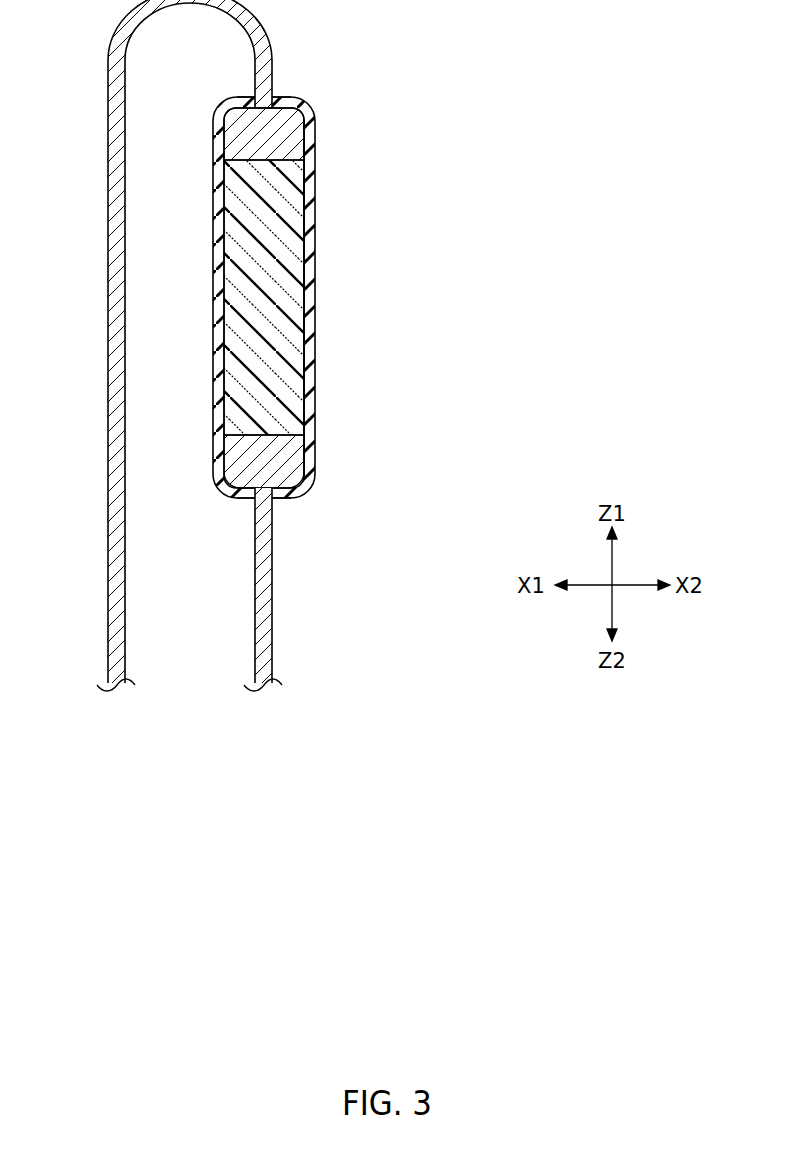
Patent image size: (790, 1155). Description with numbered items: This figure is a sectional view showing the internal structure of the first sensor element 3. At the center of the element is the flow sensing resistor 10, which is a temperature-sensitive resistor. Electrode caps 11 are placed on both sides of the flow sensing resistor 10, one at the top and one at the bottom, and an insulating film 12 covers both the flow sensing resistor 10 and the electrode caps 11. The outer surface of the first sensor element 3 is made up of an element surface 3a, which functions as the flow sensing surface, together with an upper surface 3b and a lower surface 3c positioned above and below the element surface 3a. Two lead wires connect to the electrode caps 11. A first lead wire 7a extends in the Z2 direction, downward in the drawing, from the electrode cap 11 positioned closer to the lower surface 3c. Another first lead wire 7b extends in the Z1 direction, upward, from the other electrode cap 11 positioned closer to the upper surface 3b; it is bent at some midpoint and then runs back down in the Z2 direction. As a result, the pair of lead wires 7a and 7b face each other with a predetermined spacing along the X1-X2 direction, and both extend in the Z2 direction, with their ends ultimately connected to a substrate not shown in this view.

The first sensor element 3 is at (304, 302).
The element surface 3a is at (315, 285).
The upper surface 3b is at (285, 96).
The lower surface 3c is at (288, 498).
The flow sensing resistor 10 is at (292, 333).
The electrode caps 11 is at (287, 146).
The insulating film 12 is at (307, 238).
The first lead wire 7a is at (263, 622).
The first lead wire 7b is at (108, 520).